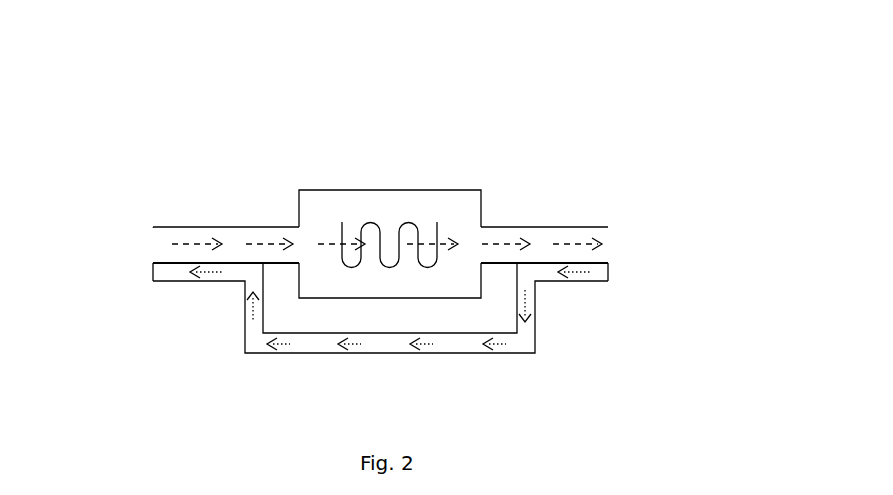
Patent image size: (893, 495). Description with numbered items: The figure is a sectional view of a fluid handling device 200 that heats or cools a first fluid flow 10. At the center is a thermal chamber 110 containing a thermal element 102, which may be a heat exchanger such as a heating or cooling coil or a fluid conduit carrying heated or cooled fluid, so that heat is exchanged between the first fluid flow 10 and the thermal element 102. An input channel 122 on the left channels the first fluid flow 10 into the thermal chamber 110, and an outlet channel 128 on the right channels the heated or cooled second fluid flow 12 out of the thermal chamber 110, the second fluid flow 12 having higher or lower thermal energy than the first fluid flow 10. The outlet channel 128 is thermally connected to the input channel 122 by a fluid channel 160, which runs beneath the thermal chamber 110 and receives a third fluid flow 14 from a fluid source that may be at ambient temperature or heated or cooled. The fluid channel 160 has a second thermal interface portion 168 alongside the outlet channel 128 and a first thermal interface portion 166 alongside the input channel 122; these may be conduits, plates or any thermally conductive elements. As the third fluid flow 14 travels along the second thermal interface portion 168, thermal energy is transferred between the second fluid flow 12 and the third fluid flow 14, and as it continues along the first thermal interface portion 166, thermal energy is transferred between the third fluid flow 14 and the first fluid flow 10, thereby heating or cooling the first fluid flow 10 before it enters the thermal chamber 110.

The fluid handling device 200 is at (734, 38).
The thermal chamber 110 is at (435, 200).
The thermal element 102 is at (372, 223).
The input channel 122 is at (203, 228).
The outlet channel 128 is at (558, 227).
The fluid channel 160 is at (510, 353).
The first fluid flow 10 is at (188, 245).
The second fluid flow 12 is at (518, 248).
The third fluid flow 14 is at (280, 343).
The first thermal interface portion 166 is at (163, 258).
The second thermal interface portion 168 is at (602, 261).